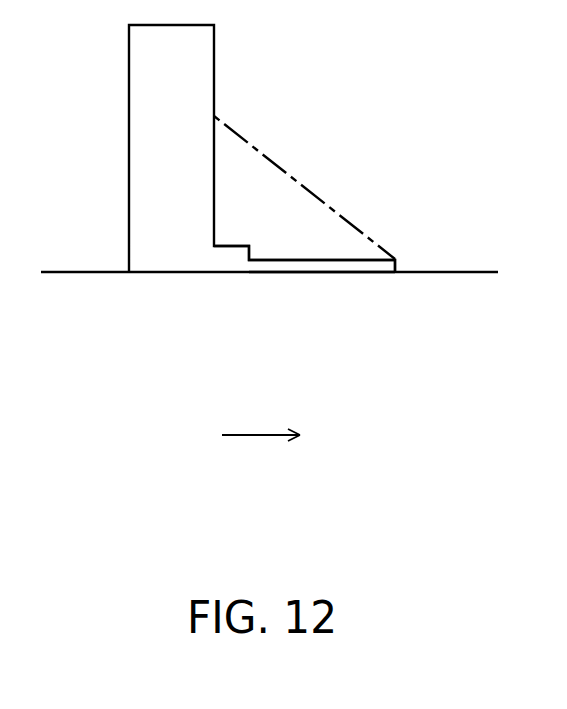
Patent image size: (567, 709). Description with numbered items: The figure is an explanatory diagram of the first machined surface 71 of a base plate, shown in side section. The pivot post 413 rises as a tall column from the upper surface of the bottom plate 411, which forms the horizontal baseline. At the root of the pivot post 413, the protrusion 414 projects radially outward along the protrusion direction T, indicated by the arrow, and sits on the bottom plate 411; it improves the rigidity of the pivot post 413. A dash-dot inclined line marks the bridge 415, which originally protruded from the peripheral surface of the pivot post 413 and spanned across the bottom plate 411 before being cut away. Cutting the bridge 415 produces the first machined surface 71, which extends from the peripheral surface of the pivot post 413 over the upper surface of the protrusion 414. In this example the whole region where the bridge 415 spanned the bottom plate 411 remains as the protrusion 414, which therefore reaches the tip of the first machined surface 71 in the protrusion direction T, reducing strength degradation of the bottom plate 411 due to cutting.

The pivot post 413 is at (137, 82).
The bottom plate 411 is at (430, 272).
The first machined surface 71 is at (303, 260).
The protrusion 414 is at (308, 272).
The bridge 415 is at (288, 207).
The protrusion direction T is at (260, 437).